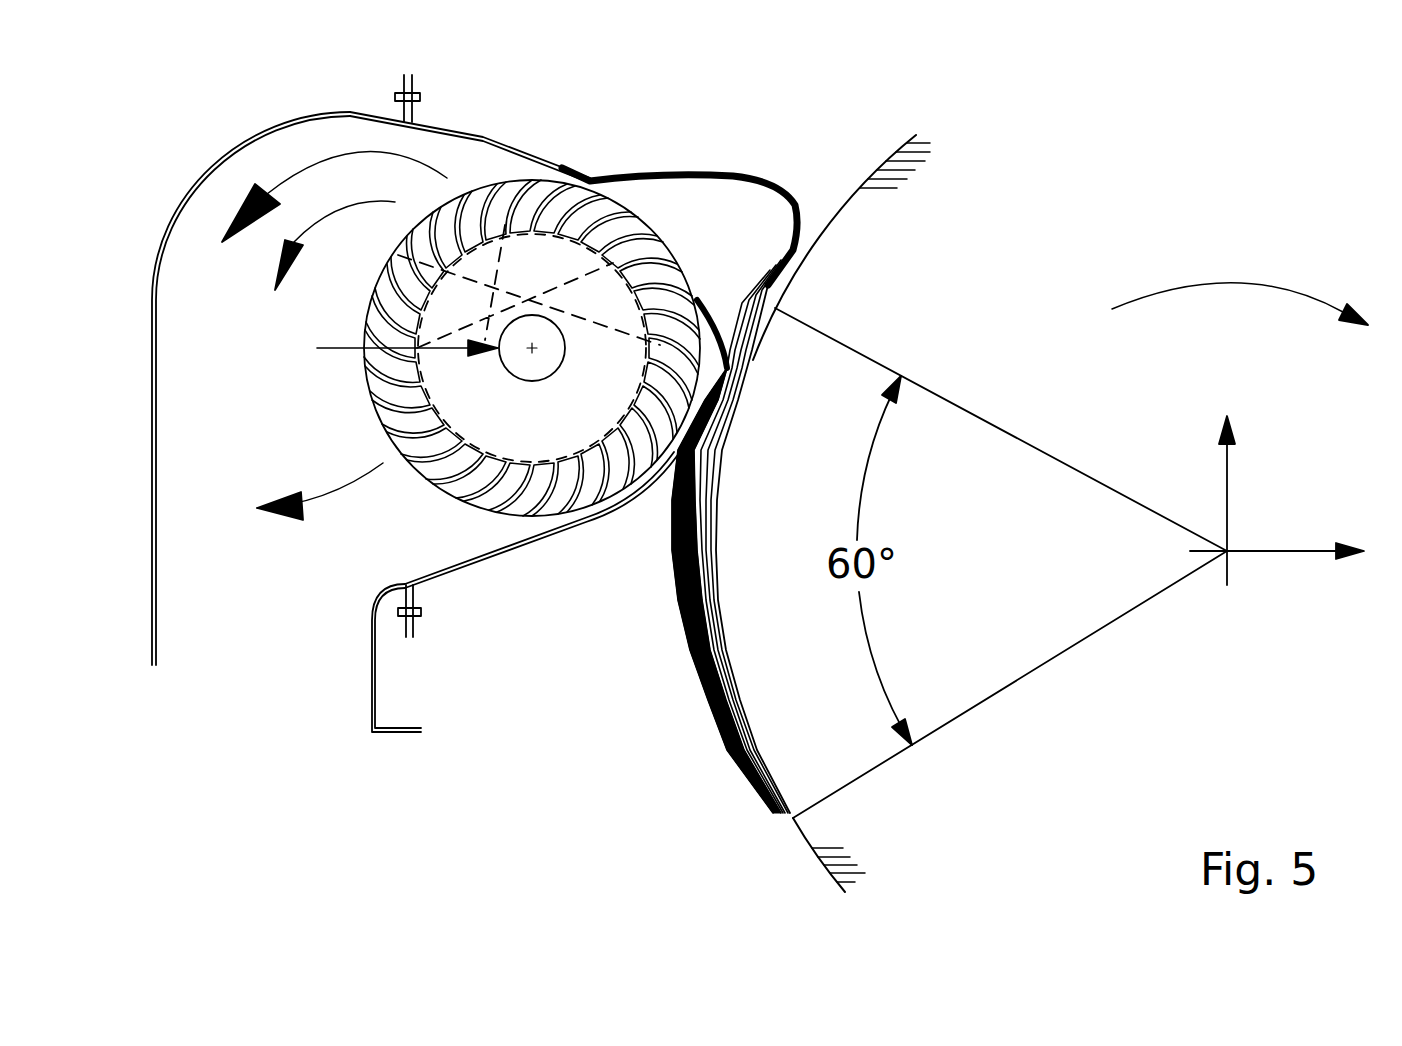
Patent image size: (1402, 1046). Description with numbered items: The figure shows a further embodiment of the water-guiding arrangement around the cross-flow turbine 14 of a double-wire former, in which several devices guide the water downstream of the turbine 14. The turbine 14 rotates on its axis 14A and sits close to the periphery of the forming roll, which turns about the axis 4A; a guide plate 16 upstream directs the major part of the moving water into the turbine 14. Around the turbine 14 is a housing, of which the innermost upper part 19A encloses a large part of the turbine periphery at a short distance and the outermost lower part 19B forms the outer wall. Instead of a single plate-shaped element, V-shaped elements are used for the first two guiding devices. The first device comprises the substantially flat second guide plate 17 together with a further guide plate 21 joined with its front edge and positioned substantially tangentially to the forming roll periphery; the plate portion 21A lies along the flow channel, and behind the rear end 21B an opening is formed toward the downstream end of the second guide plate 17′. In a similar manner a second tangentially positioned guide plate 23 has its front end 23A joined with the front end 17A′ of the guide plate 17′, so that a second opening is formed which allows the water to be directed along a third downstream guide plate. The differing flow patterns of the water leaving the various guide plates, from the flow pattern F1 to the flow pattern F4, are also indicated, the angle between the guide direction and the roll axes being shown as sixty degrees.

The axis 4A is at (1229, 559).
The turbine 14 is at (440, 490).
The axis of the turbine 14A is at (532, 352).
The guide plate 16 is at (693, 658).
The second guide plate 17 is at (726, 456).
The second guide plate 17′ is at (733, 366).
The front end of the second guide plate 17A′ is at (901, 376).
The innermost upper part of the housing 19A is at (487, 138).
The outermost lower part of the housing 19B is at (160, 252).
The guide plate 21 is at (725, 428).
The nozzle inner plate 21A is at (716, 486).
The rear end 21B is at (728, 378).
The second tangentially positioned guide plate 23 is at (786, 288).
The front end 23A is at (775, 330).
The flow pattern F1 is at (598, 332).
The flow pattern F4 is at (480, 392).